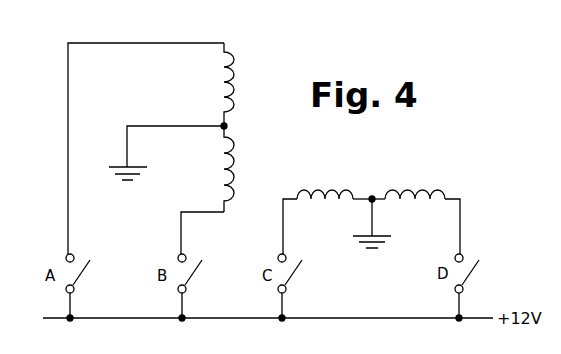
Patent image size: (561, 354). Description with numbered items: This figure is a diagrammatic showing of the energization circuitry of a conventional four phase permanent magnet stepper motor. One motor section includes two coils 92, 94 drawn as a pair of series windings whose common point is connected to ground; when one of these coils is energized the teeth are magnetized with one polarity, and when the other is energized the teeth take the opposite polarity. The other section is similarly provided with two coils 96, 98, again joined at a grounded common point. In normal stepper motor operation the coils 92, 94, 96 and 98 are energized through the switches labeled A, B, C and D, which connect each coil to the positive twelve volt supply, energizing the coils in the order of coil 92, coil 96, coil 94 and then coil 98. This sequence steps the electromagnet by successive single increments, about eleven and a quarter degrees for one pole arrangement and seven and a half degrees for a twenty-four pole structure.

The coil 92 is at (235, 58).
The coil 94 is at (238, 162).
The coil 96 is at (332, 188).
The coil 98 is at (424, 188).